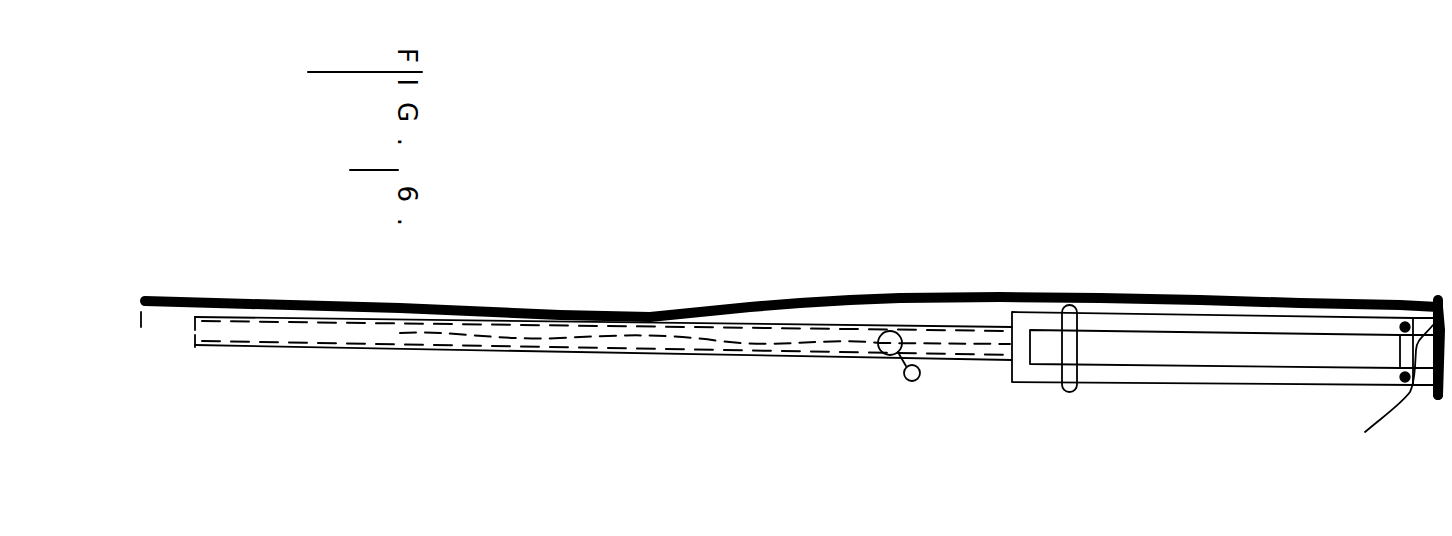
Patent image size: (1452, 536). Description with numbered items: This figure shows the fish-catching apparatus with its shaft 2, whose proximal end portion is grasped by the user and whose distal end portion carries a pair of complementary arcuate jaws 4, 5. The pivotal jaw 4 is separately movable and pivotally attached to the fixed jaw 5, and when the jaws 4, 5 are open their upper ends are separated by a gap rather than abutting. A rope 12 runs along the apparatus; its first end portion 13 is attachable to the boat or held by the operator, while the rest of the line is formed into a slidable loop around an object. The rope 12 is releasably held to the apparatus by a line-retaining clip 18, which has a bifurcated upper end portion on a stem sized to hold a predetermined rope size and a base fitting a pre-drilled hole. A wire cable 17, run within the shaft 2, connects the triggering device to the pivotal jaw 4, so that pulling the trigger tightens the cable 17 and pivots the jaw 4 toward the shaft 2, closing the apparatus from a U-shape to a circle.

The shaft 2 is at (748, 360).
The pivotal arcuate jaw 4 is at (1209, 313).
The fixed arcuate jaw 5 is at (1240, 387).
The rope 12 is at (1430, 295).
The first end portion of rope 13 is at (830, 292).
The wire cable 17 is at (904, 392).
The line-retaining clip 18 is at (1365, 432).